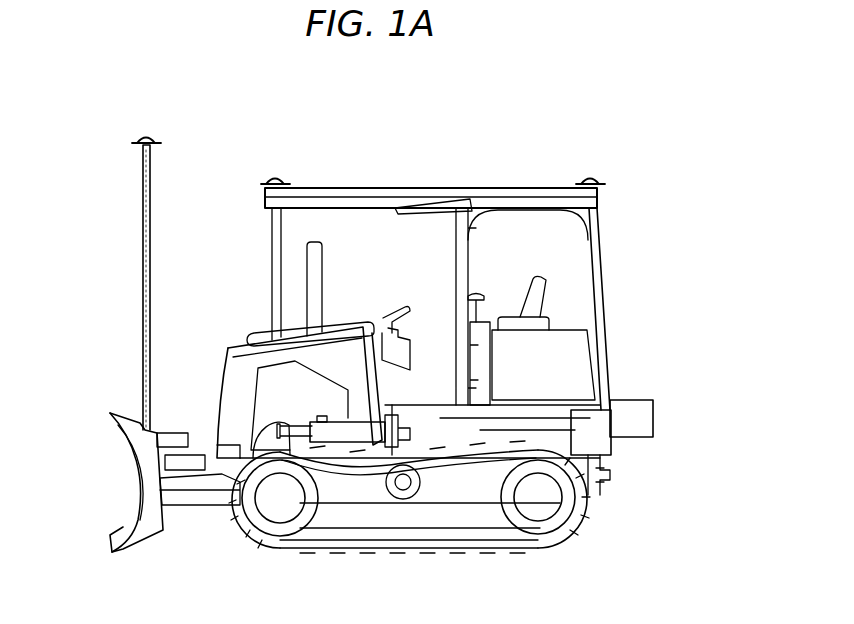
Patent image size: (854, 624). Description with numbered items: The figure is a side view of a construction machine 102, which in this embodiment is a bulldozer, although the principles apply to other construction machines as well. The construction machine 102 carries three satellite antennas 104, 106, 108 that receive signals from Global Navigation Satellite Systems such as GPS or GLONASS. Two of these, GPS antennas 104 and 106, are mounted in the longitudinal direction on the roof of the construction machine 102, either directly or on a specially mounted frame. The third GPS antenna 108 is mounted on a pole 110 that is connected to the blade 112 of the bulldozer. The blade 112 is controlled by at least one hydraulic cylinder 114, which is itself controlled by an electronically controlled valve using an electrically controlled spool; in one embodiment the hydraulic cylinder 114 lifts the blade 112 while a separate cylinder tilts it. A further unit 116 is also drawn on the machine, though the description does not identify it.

The construction machine 102 is at (667, 116).
The satellite antenna 104 is at (585, 178).
The satellite antenna 106 is at (274, 178).
The satellite antenna 108 is at (146, 137).
The pole 110 is at (143, 248).
The blade 112 is at (132, 478).
The hydraulic cylinder 114 is at (347, 440).
The control unit 116 is at (655, 415).